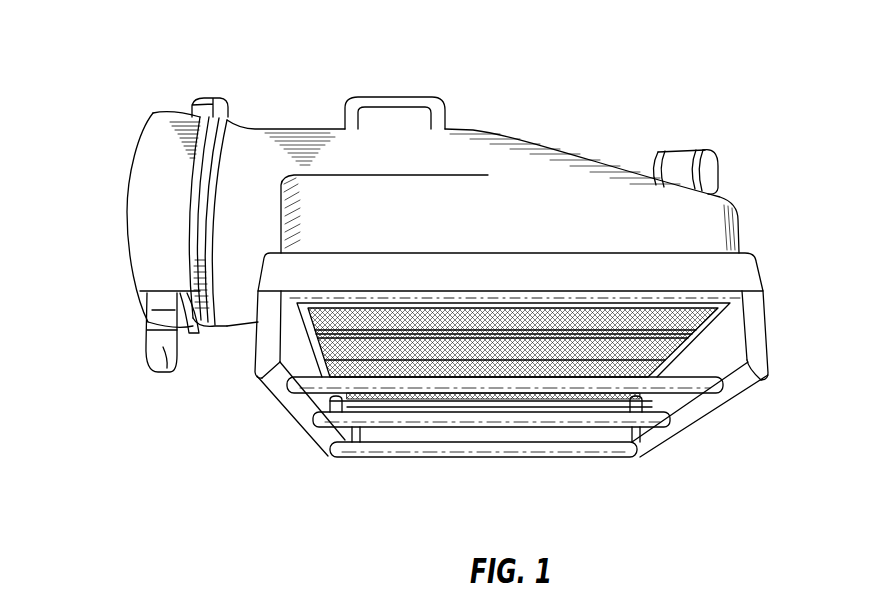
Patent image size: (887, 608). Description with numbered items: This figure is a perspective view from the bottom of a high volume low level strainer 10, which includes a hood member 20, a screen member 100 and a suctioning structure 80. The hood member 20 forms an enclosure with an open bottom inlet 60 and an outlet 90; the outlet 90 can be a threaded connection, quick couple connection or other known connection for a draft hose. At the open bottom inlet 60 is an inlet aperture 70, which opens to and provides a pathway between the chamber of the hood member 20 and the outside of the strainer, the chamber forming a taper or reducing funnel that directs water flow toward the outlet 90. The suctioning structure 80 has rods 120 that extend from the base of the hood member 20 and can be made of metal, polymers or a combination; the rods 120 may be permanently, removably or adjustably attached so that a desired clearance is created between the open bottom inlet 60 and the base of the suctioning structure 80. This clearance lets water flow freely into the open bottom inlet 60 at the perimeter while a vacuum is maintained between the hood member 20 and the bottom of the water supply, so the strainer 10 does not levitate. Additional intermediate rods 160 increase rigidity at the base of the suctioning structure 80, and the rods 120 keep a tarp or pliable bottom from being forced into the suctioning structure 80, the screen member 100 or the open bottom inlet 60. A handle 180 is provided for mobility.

The strainer 10 is at (729, 55).
The hood member 20 is at (586, 157).
The open bottom inlet 60 is at (359, 336).
The inlet aperture 70 is at (571, 356).
The suctioning structure 80 is at (781, 320).
The outlet 90 is at (95, 207).
The screen member 100 is at (443, 343).
The rods 120 is at (762, 348).
The intermediate rods 160 is at (413, 384).
The handle 180 is at (385, 96).